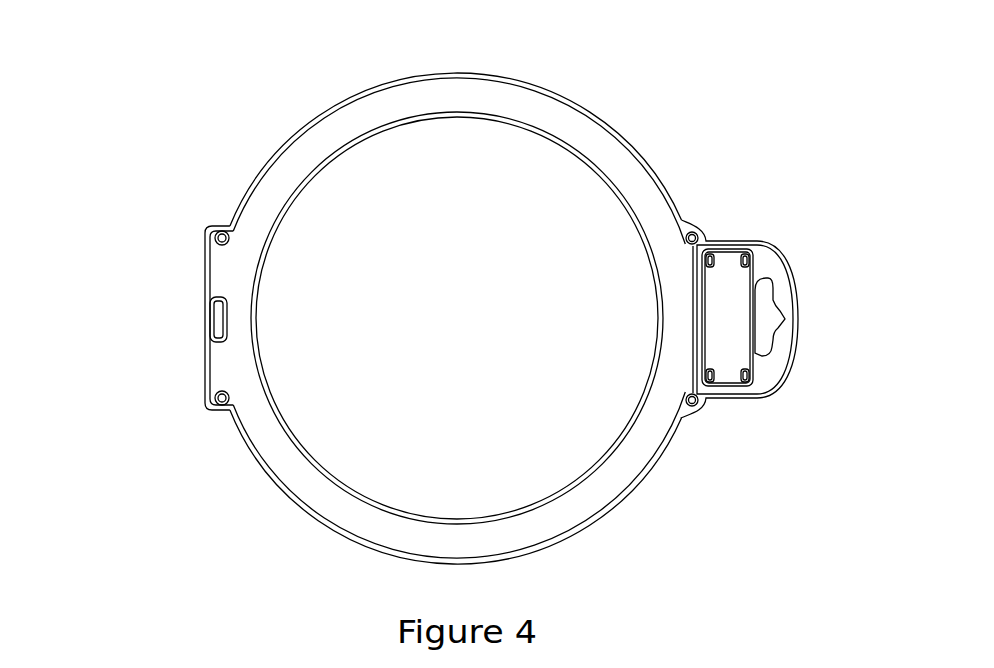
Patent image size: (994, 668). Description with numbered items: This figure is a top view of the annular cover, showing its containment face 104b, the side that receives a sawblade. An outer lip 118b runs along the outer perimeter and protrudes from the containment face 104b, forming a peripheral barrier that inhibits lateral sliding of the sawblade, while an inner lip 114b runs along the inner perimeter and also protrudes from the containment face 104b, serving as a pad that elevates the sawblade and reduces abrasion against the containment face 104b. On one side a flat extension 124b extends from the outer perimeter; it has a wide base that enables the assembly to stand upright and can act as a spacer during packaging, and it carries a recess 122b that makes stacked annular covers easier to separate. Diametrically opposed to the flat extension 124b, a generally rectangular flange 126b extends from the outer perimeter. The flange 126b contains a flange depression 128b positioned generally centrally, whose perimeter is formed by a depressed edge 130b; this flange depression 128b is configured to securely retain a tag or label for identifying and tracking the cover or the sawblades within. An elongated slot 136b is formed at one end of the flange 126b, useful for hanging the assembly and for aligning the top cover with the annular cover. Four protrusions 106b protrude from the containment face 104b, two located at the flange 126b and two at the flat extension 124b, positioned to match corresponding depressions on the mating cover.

The containment face 104b is at (332, 137).
The protrusion 106b is at (221, 231).
The inner lip 114b is at (518, 123).
The outer lip 118b is at (552, 96).
The recess 122b is at (213, 322).
The flat extension 124b is at (207, 360).
The flange 126b is at (798, 352).
The flange depression 128b is at (728, 254).
The depressed edge 130b is at (728, 383).
The elongated slot 136b is at (775, 298).